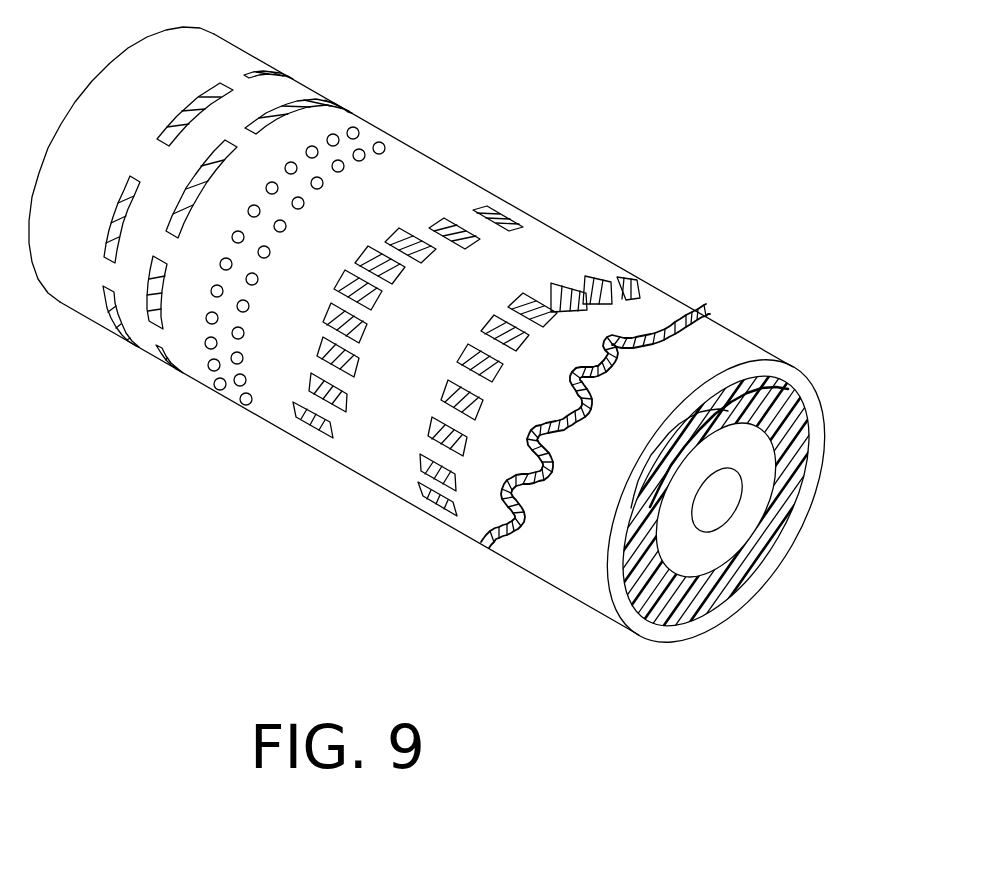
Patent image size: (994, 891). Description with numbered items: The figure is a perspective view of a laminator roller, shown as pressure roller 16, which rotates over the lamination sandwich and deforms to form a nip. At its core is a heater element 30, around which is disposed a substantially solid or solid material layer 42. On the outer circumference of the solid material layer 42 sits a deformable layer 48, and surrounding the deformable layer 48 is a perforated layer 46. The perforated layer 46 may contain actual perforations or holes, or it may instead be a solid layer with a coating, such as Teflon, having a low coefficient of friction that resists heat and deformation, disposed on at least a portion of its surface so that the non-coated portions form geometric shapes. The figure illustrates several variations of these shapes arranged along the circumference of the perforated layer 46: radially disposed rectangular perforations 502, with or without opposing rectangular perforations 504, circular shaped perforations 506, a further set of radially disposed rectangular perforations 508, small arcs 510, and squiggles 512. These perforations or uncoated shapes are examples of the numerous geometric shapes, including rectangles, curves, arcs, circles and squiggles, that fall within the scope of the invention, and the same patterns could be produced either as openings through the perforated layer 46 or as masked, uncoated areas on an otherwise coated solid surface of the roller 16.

The pressure roller 16 is at (743, 350).
The heater element 30 is at (723, 507).
The solid material layer 42 is at (697, 563).
The perforated layer 46 is at (818, 435).
The deformable layer 48 is at (798, 498).
The radially disposed rectangular perforations 502 is at (268, 72).
The opposing rectangular perforations 504 is at (320, 97).
The circular shaped perforations 506 is at (382, 148).
The radially disposed rectangular perforations 508 is at (500, 215).
The small arcs 510 is at (630, 284).
The squiggles 512 is at (697, 315).